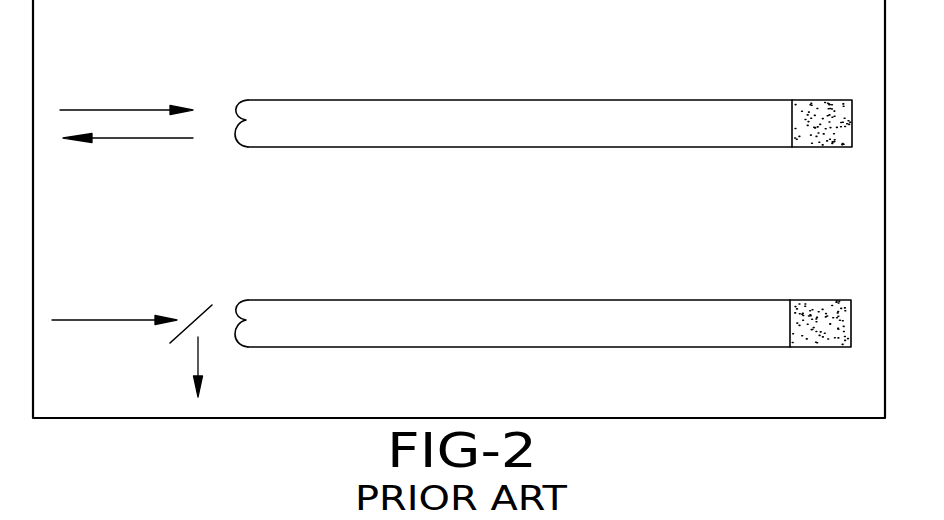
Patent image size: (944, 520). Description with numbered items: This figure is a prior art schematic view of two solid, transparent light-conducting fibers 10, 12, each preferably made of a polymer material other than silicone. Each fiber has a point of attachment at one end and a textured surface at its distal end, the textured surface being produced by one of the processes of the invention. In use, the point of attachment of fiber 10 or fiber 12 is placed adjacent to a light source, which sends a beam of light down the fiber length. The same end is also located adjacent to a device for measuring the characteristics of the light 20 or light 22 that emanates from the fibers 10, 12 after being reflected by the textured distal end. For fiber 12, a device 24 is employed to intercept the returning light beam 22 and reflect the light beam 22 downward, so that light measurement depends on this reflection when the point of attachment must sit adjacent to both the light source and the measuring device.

The light-conducting fiber 10 is at (535, 118).
The light-conducting fiber 12 is at (533, 323).
The light emanating from fiber 20 is at (132, 138).
The returning light beam 22 is at (195, 358).
The device 24 is at (193, 318).